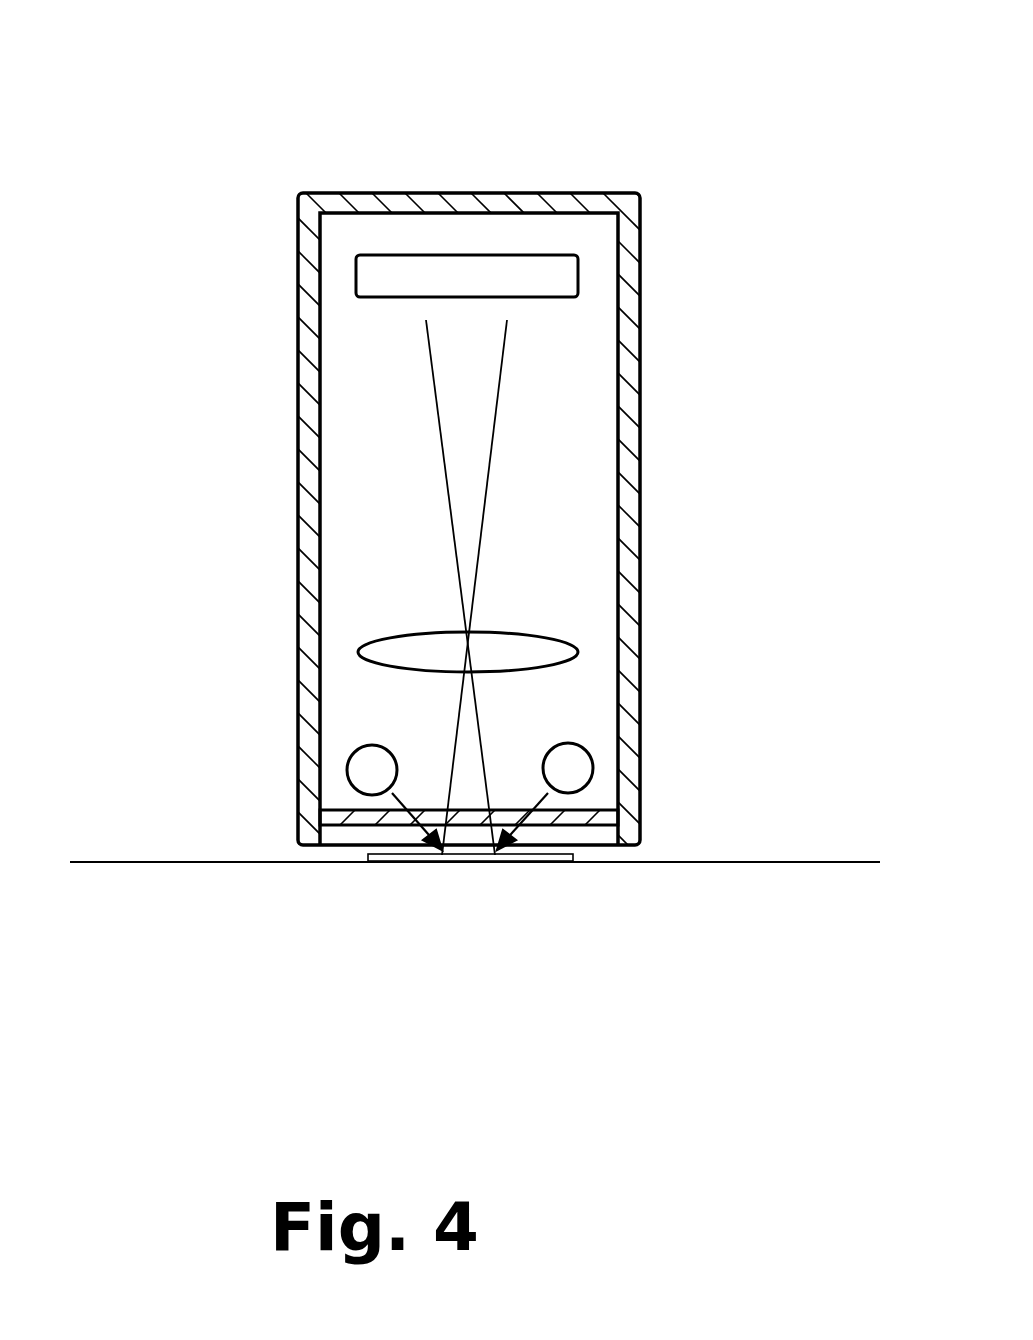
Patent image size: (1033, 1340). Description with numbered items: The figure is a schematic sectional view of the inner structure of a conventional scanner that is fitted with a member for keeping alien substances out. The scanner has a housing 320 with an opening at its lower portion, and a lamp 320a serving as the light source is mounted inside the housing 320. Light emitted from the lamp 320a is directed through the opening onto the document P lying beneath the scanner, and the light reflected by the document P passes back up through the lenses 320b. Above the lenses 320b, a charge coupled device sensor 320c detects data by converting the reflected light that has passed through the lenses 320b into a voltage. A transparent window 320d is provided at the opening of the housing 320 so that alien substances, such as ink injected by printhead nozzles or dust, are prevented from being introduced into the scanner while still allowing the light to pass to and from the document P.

The housing 320 is at (624, 193).
The lamp 320a is at (590, 752).
The lenses 320b is at (568, 640).
The charge coupled device sensor 320c is at (578, 277).
The transparent window 320d is at (600, 805).
The paper P is at (540, 862).